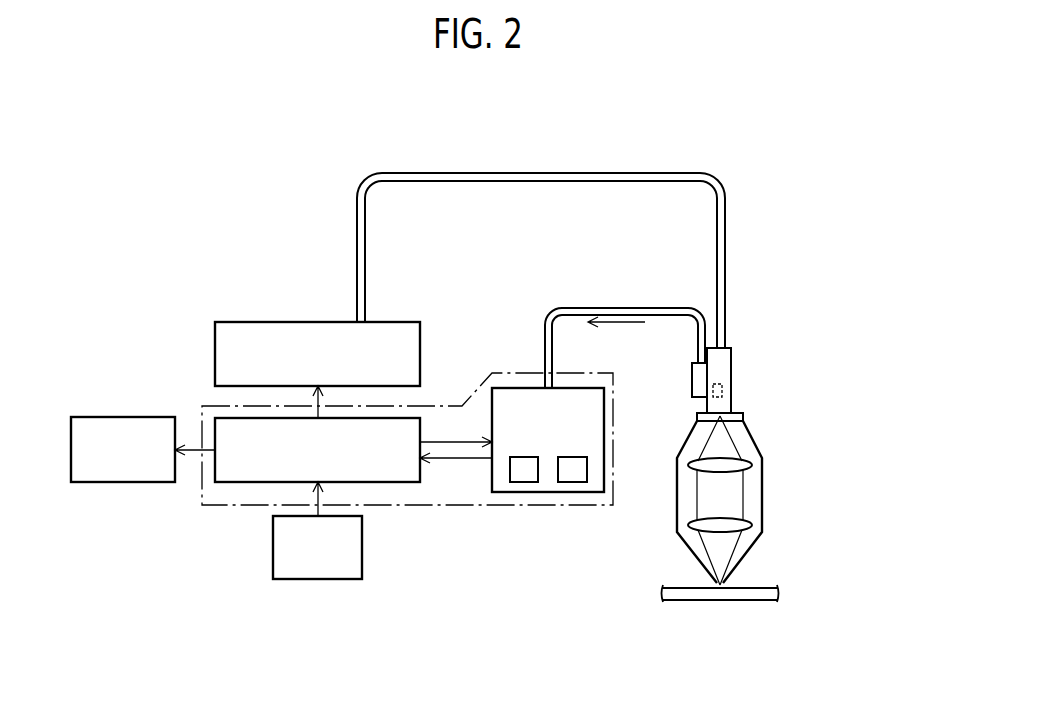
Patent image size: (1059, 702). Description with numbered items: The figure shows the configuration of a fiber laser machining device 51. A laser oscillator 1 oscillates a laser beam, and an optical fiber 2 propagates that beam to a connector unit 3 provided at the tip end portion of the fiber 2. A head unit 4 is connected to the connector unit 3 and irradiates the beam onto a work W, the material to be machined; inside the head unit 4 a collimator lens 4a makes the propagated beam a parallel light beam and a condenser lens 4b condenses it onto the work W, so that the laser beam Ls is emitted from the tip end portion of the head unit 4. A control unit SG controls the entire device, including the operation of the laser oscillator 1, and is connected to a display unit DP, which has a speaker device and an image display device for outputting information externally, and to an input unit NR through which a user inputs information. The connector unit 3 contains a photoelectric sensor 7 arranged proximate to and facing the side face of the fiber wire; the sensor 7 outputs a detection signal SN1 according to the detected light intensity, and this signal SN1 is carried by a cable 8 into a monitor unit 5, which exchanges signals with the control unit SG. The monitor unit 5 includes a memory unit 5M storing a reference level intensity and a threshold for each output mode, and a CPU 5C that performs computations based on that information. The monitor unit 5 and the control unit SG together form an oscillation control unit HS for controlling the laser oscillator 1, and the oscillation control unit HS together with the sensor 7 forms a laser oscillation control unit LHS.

The laser machining device 51 is at (788, 159).
The laser oscillator 1 is at (378, 322).
The optical fiber 2 is at (502, 172).
The connector unit 3 is at (732, 370).
The head unit 4 is at (752, 500).
The collimator lens 4a is at (742, 463).
The condenser lens 4b is at (742, 523).
The monitor unit 5 is at (582, 473).
The CPU 5C is at (522, 482).
The memory unit 5M is at (576, 482).
The sensor 7 is at (722, 388).
The cable 8 is at (615, 310).
The detection signal SN1 is at (616, 336).
The oscillation control unit HS is at (752, 494).
The laser oscillation control unit LHS is at (771, 481).
The laser beam Ls is at (732, 578).
The work W is at (718, 600).
The display unit DP is at (115, 417).
The input unit NR is at (362, 556).
The control unit SG is at (403, 483).